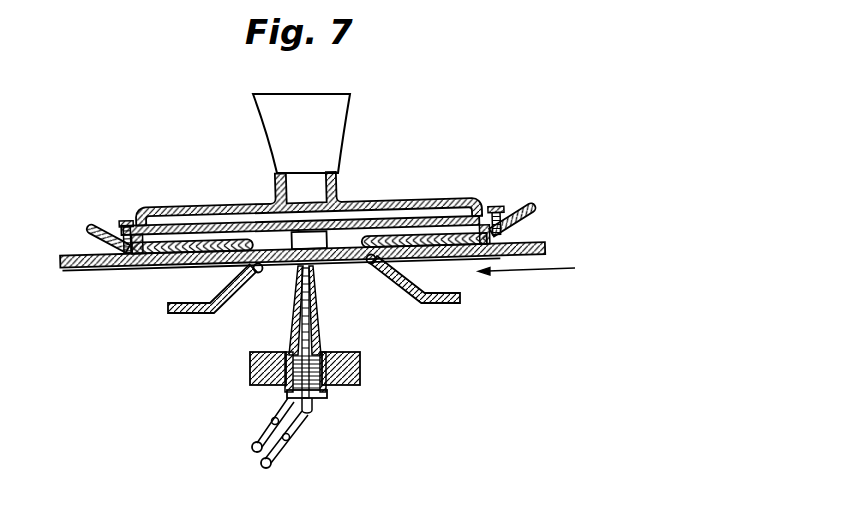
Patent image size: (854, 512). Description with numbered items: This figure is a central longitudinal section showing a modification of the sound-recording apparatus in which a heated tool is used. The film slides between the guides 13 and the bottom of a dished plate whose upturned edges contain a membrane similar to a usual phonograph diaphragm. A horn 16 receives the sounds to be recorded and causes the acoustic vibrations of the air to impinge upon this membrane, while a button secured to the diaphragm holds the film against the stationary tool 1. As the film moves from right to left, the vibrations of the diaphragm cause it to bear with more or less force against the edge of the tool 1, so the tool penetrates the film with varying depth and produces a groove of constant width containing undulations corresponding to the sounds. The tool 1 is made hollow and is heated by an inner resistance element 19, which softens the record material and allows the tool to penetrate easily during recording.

The tool 1 is at (312, 270).
The guides 13 is at (190, 312).
The horn 16 is at (318, 123).
The inner resistance element 19 is at (308, 321).